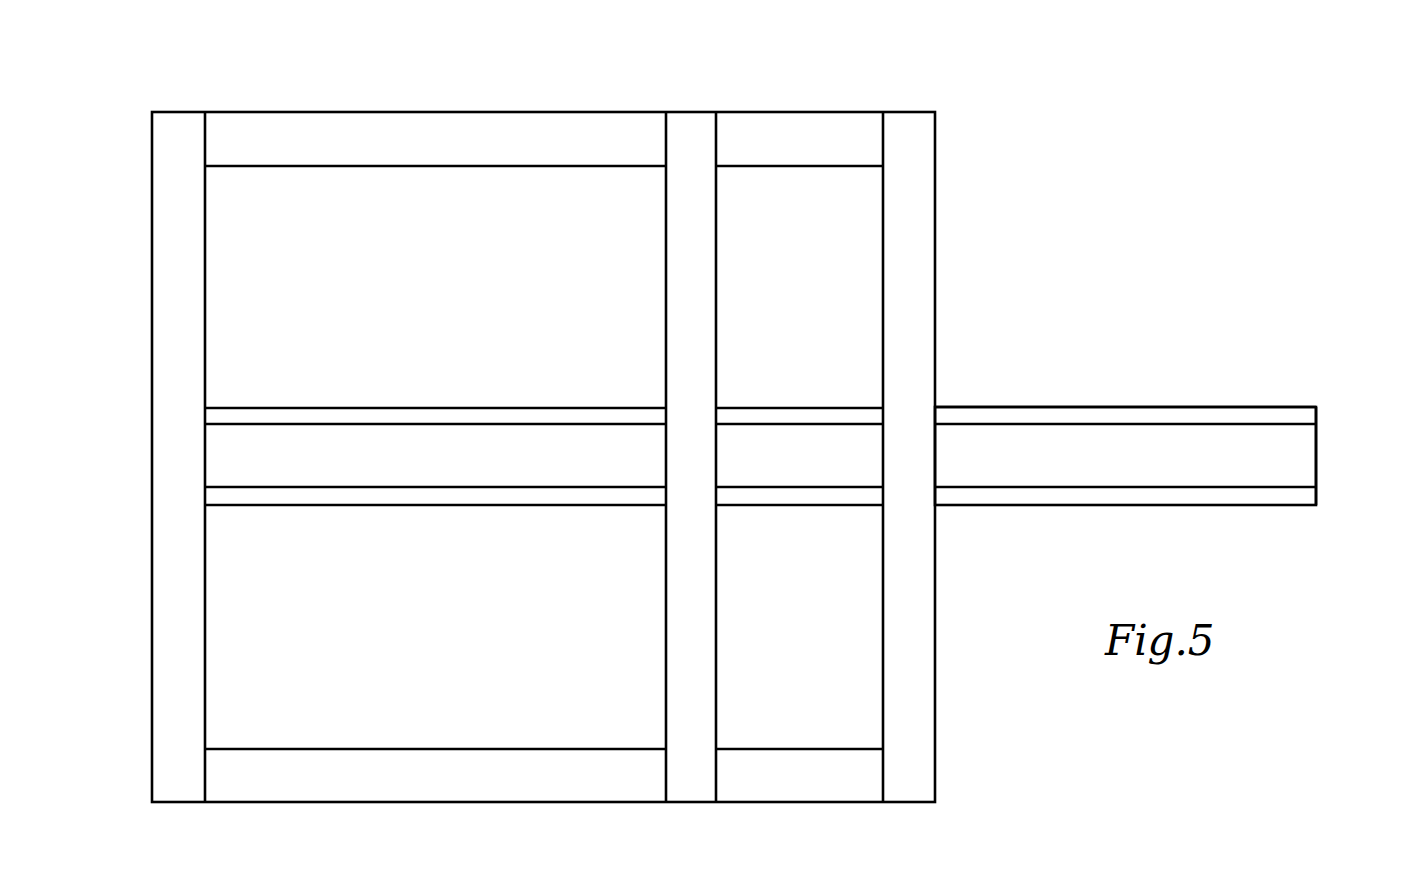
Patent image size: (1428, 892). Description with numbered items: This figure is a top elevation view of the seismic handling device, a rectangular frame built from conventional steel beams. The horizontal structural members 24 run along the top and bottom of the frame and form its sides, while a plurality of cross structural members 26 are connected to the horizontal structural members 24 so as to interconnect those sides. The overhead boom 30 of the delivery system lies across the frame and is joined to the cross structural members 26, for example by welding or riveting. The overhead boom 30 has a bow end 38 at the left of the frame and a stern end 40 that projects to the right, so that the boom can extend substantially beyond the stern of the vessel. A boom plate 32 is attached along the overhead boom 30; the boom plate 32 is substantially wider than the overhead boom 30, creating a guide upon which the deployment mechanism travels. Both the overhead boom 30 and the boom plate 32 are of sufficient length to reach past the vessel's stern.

The horizontal structural member 24 is at (788, 112).
The cross structural member 26 is at (206, 245).
The overhead boom 30 is at (1230, 424).
The boom plate 32 is at (1097, 406).
The bow end 38 is at (152, 440).
The stern end 40 is at (1316, 462).